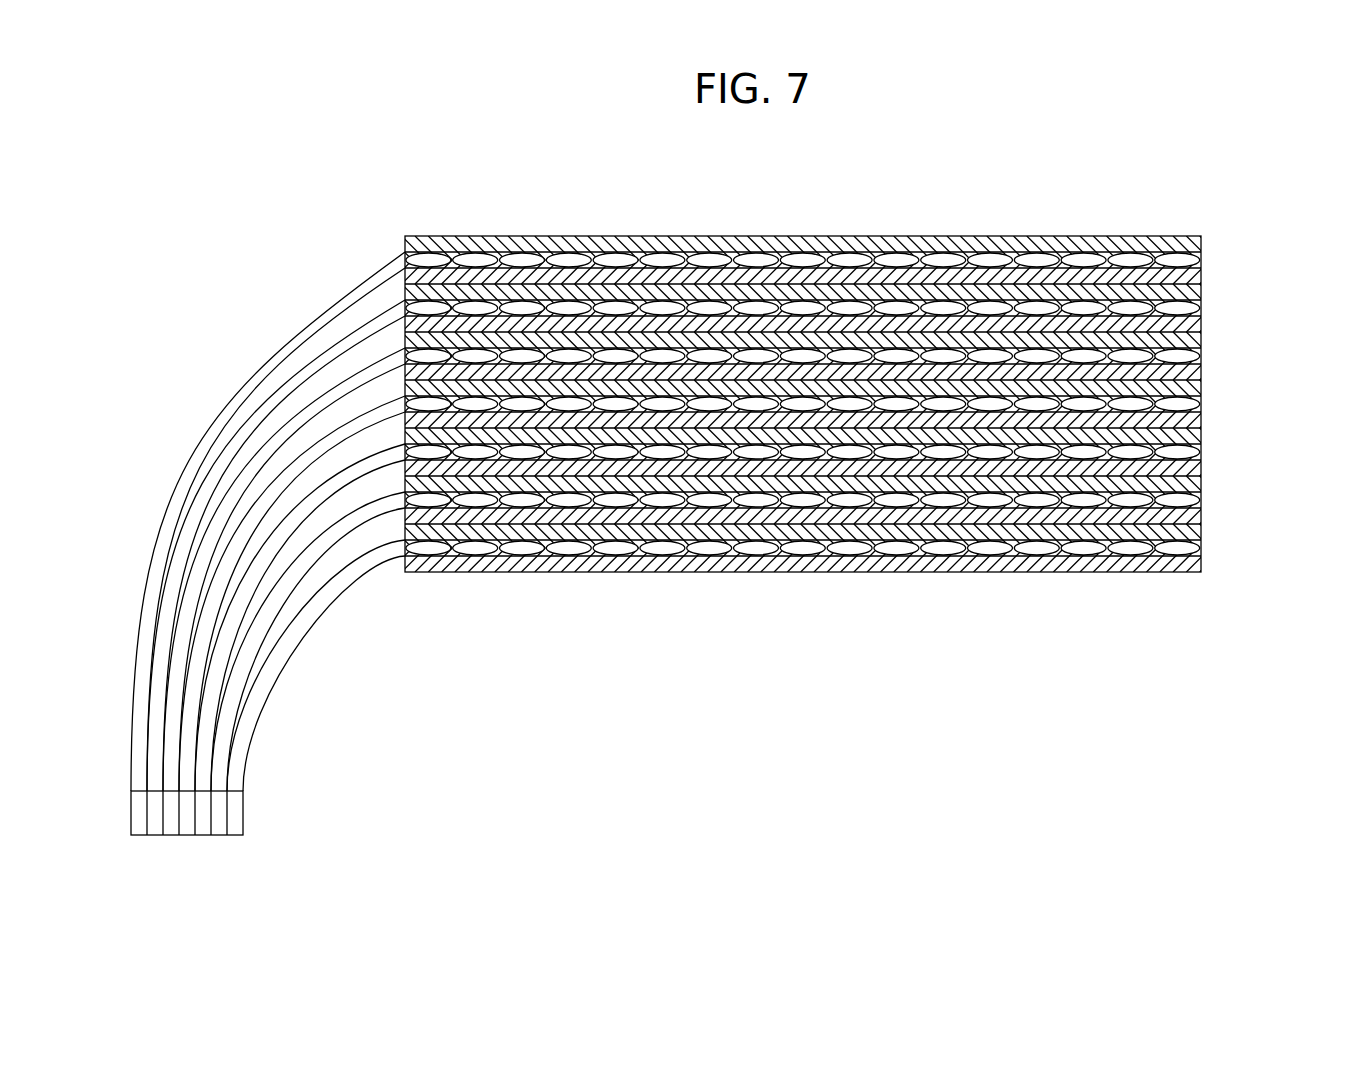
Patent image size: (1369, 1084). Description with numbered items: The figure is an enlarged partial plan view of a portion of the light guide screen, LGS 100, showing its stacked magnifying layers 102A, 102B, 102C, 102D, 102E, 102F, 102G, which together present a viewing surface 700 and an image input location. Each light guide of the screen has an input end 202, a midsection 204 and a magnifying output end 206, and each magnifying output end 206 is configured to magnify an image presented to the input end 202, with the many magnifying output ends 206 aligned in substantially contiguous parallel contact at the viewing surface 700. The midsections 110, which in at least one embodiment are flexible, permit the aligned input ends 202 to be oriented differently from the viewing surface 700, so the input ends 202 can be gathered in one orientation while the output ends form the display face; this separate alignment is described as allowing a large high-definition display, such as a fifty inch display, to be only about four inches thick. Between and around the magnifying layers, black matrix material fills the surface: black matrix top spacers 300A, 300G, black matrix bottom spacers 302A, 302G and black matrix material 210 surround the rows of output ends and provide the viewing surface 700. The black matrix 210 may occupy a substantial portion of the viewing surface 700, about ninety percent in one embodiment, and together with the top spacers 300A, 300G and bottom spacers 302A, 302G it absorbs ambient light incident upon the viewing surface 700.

The LGS 100 is at (1147, 178).
The viewing surface 700 is at (903, 232).
The midsections 110 is at (238, 393).
The midsection 204 is at (209, 332).
The input end 202 is at (247, 813).
The magnifying output end 206 is at (615, 263).
The black matrix material 210 is at (783, 258).
The magnifying layer 102A is at (1205, 257).
The magnifying layer 102B is at (1205, 303).
The magnifying layer 102C is at (1207, 352).
The magnifying layer 102D is at (1207, 397).
The magnifying layer 102E is at (1207, 447).
The magnifying layer 102F is at (1207, 492).
The magnifying layer 102G is at (1207, 543).
The black matrix top spacer 300A is at (1201, 237).
The black matrix bottom spacer 302A is at (1193, 280).
The black matrix top spacer 300G is at (1190, 530).
The black matrix bottom spacer 302G is at (1193, 560).